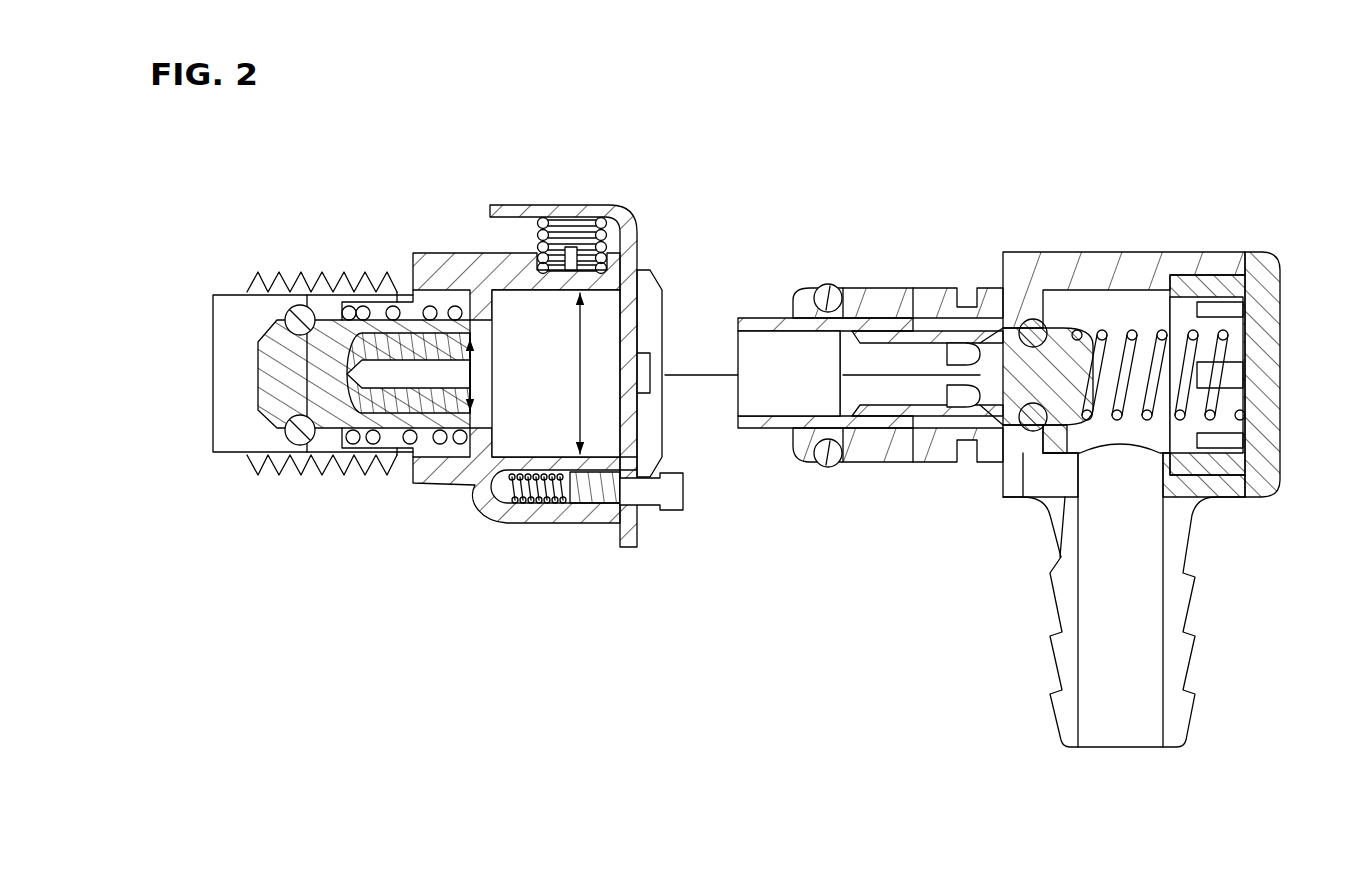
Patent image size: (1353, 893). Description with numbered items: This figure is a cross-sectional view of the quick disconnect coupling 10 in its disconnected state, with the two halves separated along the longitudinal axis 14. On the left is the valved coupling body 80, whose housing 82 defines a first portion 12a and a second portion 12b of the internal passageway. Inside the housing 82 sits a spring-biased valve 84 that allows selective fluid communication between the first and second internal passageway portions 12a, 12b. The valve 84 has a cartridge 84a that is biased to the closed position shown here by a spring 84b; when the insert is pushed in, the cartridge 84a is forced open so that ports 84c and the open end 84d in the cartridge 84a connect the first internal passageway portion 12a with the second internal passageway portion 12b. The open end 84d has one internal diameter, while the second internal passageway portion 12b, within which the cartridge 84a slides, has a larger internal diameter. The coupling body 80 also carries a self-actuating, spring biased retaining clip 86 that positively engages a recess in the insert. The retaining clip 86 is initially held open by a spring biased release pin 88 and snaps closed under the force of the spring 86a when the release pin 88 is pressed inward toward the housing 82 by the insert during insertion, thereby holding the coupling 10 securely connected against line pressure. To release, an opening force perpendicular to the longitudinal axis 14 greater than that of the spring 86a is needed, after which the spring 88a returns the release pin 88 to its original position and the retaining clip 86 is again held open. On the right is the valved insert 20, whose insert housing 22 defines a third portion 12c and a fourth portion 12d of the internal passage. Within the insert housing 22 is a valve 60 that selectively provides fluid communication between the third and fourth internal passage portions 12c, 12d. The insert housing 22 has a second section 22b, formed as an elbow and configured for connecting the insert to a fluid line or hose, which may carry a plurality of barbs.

The quick disconnect coupling 10 is at (680, 125).
The first portion of the internal passageway 12a is at (255, 330).
The second portion of the internal passageway 12b is at (550, 397).
The third portion of the internal passage 12c is at (806, 366).
The fourth portion of the internal passage 12d is at (1150, 688).
The longitudinal axis 14 is at (722, 373).
The valved insert 20 is at (1033, 244).
The insert housing 22 is at (938, 282).
The second section 22b is at (1175, 567).
The valve 60 is at (771, 316).
The valved coupling body 80 is at (276, 229).
The housing 82 is at (287, 460).
The spring-biased valve 84 is at (498, 313).
The cartridge 84a is at (413, 328).
The spring 84b is at (370, 390).
The ports 84c is at (390, 400).
The open end 84d is at (493, 400).
The retaining clip 86 is at (548, 206).
The spring 86a is at (545, 249).
The release pin 88 is at (668, 497).
The spring 88a is at (532, 488).